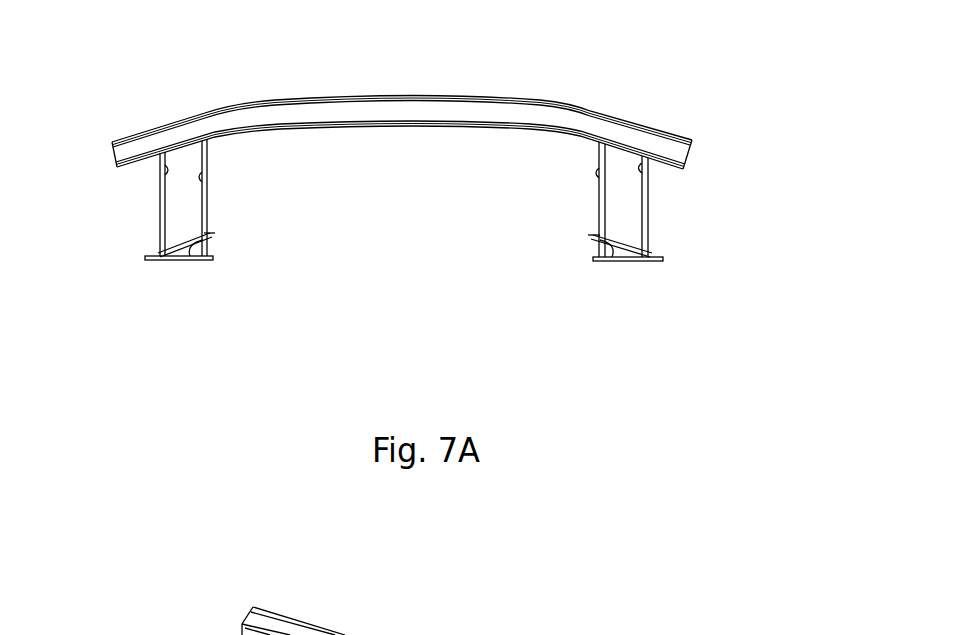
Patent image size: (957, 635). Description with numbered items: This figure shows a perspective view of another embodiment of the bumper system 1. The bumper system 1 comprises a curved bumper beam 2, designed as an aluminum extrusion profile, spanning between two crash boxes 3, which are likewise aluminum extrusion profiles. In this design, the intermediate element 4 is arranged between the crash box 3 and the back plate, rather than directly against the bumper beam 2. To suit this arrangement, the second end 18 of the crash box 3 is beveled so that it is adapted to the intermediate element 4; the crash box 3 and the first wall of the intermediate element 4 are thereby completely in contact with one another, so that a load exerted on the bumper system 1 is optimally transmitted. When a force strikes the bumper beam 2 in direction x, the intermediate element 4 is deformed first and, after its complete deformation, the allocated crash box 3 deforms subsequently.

The bumper system 1 is at (232, 85).
The bumper beam 2 is at (441, 106).
The crash box 3 is at (632, 181).
The intermediate element 4 is at (648, 252).
The second end of the crash box 18 is at (160, 238).